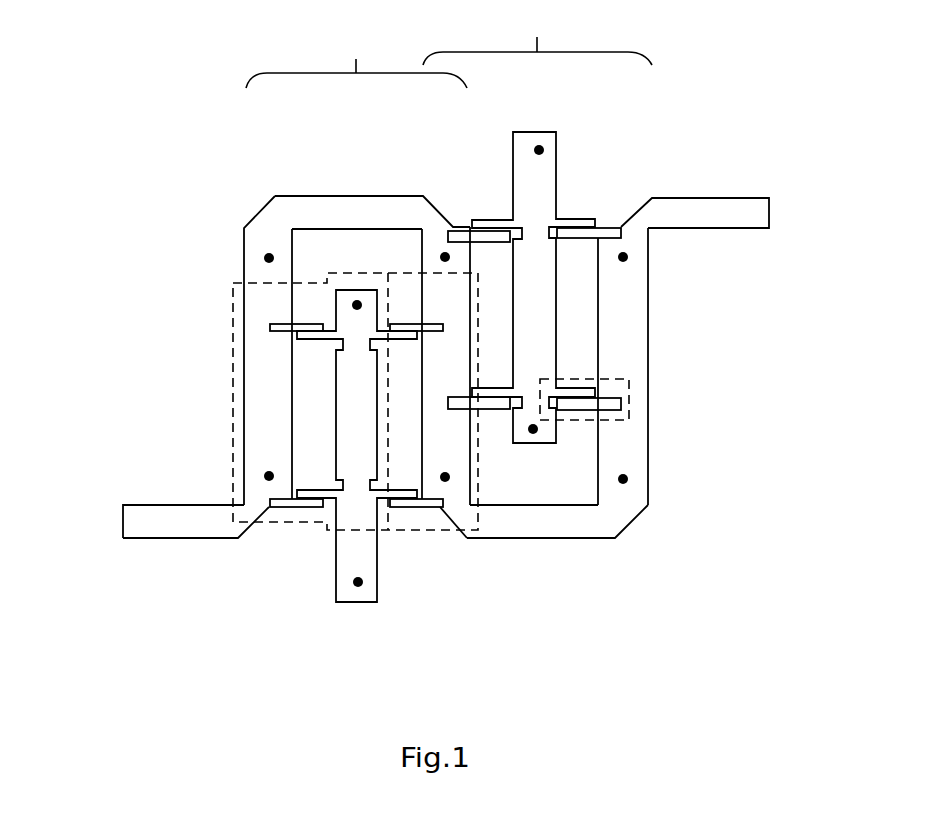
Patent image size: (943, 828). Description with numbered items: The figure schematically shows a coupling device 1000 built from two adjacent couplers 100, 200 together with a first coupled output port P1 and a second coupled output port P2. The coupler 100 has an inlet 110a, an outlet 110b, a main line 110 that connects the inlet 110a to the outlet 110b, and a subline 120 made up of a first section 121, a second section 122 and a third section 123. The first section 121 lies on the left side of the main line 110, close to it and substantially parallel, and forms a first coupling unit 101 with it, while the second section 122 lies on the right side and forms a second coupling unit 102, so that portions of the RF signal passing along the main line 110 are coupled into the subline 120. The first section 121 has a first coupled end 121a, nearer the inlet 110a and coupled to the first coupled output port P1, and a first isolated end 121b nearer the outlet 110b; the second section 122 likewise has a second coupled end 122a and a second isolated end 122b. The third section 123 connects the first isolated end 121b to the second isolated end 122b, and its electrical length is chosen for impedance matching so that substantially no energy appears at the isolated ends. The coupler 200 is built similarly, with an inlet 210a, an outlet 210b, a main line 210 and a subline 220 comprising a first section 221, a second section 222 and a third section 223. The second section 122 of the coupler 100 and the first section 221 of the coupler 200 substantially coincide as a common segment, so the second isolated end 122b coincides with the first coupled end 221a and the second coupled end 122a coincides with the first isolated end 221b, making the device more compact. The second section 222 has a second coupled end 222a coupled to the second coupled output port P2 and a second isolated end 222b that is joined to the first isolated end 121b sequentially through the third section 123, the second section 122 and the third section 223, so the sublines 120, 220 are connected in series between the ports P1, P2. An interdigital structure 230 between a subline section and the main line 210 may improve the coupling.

The coupling device 1000 is at (172, 645).
The coupler 100 is at (282, 347).
The coupler 200 is at (620, 304).
The first coupling unit 101 is at (232, 392).
The second coupling unit 102 is at (478, 468).
The main line 110 is at (357, 457).
The inlet 110a is at (358, 585).
The outlet 110b is at (357, 302).
The subline 120 is at (243, 190).
The first section 121 is at (252, 290).
The first coupled end 121a is at (266, 476).
The first isolated end 121b is at (266, 258).
The second section 122 is at (449, 335).
The second coupled end 122a is at (445, 480).
The second isolated end 122b is at (443, 254).
The third section 123 is at (360, 206).
The main line 210 is at (533, 245).
The inlet 210a is at (539, 146).
The outlet 210b is at (533, 433).
The subline 220 is at (652, 552).
The first section 221 is at (443, 368).
The first coupled end 221a is at (443, 213).
The first isolated end 221b is at (461, 497).
The second section 222 is at (629, 340).
The second coupled end 222a is at (627, 257).
The second isolated end 222b is at (627, 479).
The third section 223 is at (545, 526).
The interdigital structure 230 is at (629, 402).
The first coupled output port P1 is at (132, 524).
The second coupled output port P2 is at (758, 218).